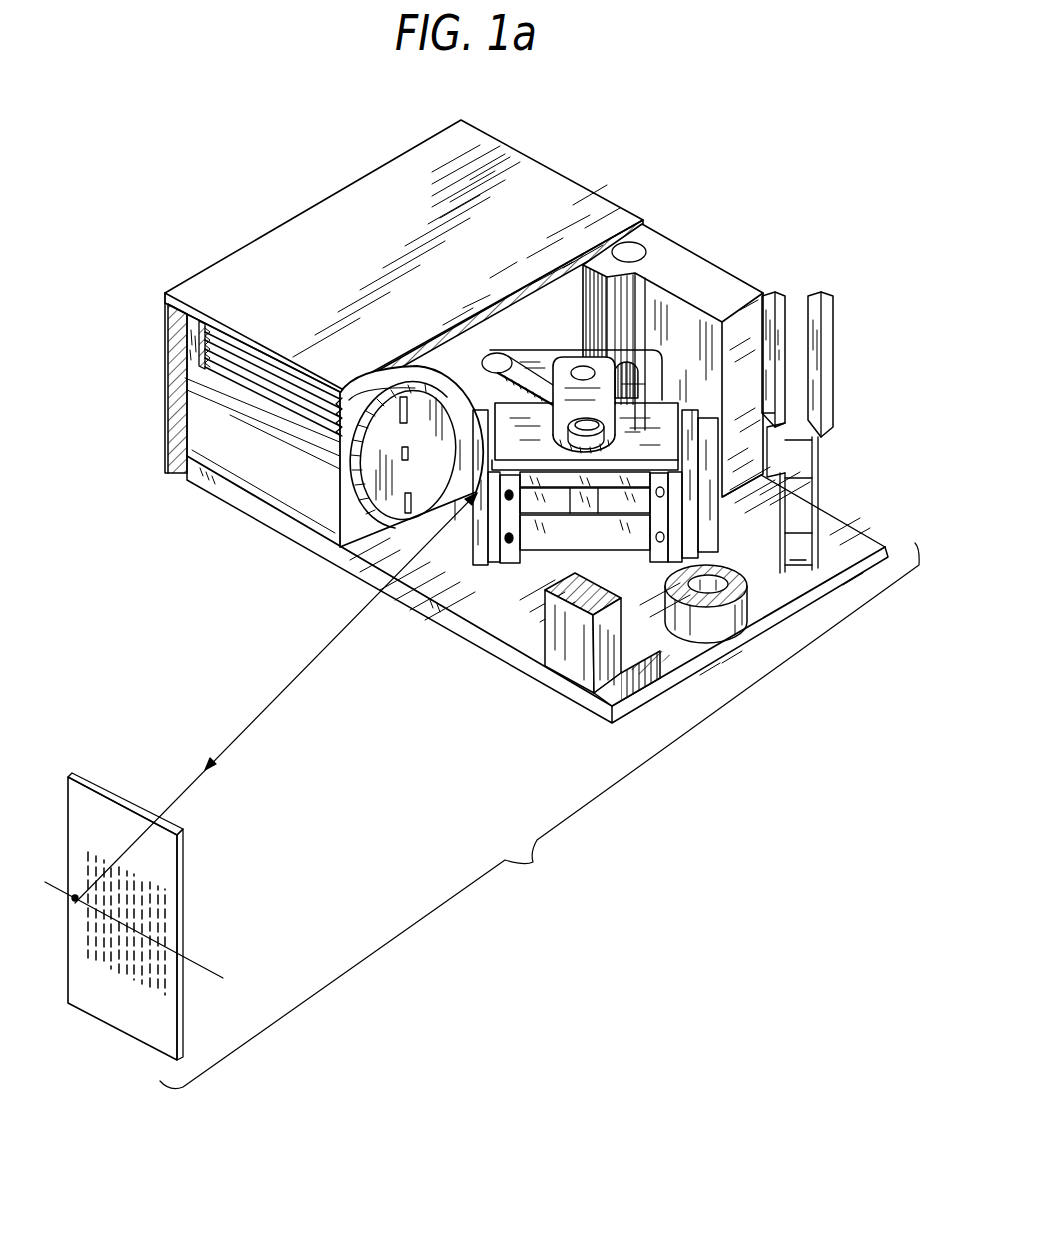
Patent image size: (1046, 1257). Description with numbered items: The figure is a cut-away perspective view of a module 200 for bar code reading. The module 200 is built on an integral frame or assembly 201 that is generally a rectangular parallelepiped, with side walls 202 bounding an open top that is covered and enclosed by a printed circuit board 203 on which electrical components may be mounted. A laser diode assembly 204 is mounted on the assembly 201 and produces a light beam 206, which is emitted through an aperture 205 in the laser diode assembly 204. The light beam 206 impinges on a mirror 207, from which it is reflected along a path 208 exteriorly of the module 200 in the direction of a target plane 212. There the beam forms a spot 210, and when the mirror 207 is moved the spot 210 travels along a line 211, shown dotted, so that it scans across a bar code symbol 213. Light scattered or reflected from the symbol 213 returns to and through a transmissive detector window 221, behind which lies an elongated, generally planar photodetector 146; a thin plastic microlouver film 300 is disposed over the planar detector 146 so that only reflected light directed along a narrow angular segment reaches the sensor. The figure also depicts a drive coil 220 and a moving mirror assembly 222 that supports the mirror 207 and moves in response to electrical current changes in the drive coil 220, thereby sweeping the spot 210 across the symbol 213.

The module 200 is at (299, 201).
The integral frame or assembly 201 is at (225, 499).
The side walls 202 is at (177, 353).
The printed circuit board 203 is at (228, 275).
The laser diode assembly 204 is at (404, 396).
The aperture 205 is at (405, 445).
The light beam 206 is at (352, 560).
The mirror 207 is at (483, 550).
The path 208 is at (220, 750).
The spot 210 is at (75, 902).
The line 211 is at (207, 964).
The target plane 212 is at (170, 1026).
The bar code symbol 213 is at (204, 884).
The drive coil 220 is at (838, 275).
The transmissive detector window 221 is at (260, 355).
The moving mirror assembly 222 is at (608, 405).
The photodetector 146 is at (368, 395).
The thin plastic film 300 is at (262, 383).